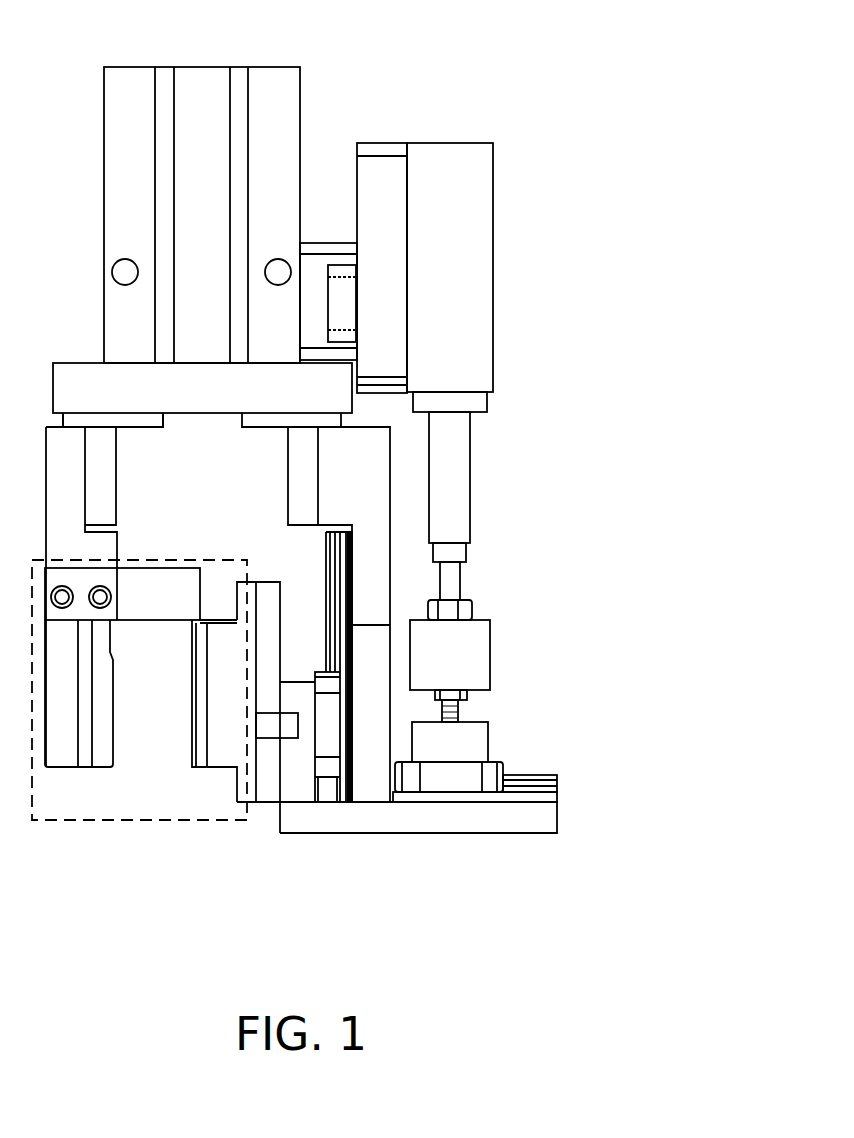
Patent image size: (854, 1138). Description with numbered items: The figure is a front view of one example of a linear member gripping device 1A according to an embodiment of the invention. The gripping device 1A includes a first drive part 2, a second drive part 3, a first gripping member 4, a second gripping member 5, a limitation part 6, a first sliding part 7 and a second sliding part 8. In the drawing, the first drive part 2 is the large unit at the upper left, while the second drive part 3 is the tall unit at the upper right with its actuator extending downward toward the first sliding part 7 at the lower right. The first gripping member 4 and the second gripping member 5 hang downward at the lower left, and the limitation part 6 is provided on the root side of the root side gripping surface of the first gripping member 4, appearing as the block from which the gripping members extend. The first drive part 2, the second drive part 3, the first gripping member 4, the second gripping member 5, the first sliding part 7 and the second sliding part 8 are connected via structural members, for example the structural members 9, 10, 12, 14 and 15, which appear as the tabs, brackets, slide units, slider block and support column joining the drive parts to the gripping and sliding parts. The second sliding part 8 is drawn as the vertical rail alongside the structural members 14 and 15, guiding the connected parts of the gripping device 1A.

The linear member gripping device 1A is at (511, 61).
The first drive part 2 is at (104, 85).
The second drive part 3 is at (480, 212).
The first gripping member 4 is at (62, 768).
The second gripping member 5 is at (220, 768).
The limitation part 6 is at (156, 568).
The first sliding part 7 is at (543, 775).
The second sliding part 8 is at (333, 793).
The structural member 9 is at (134, 428).
The structural member 10 is at (265, 803).
The structural member 12 is at (382, 149).
The structural member 14 is at (298, 803).
The structural member 15 is at (368, 803).